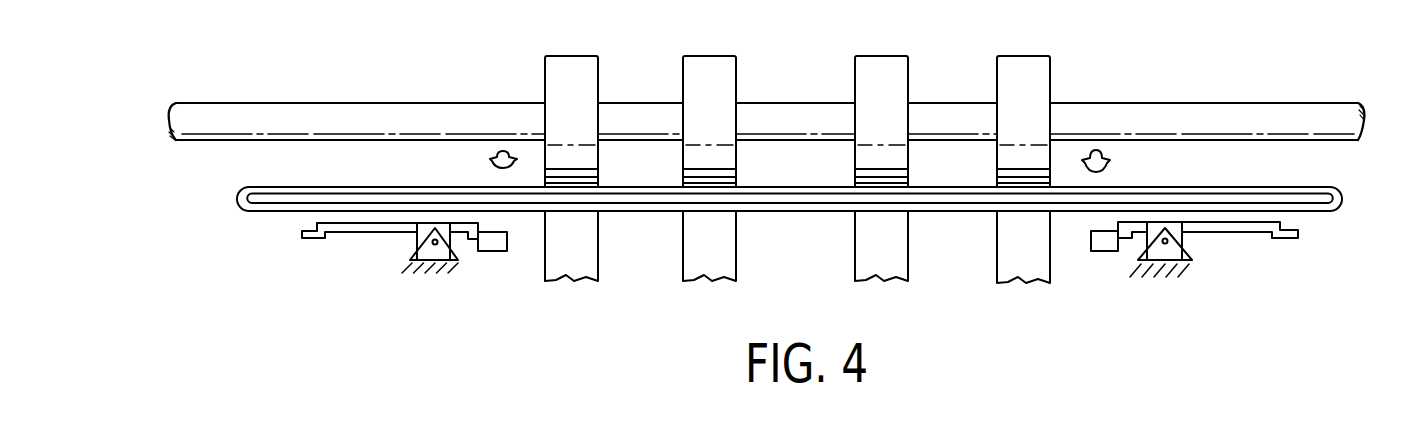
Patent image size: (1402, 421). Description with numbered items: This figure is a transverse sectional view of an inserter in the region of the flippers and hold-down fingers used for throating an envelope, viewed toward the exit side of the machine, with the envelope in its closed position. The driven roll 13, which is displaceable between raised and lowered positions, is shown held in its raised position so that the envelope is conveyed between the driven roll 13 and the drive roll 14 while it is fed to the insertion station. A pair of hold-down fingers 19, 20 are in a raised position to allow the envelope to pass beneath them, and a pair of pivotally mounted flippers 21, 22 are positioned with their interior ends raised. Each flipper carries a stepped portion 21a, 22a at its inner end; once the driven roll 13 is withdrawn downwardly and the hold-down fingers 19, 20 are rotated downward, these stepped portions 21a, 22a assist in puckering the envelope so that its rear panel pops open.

The driven roll 13 is at (865, 240).
The drive roll 14 is at (873, 78).
The hold-down finger 19 is at (490, 161).
The hold-down finger 20 is at (1110, 162).
The flipper 21 is at (348, 233).
The stepped portion 21a is at (483, 252).
The flipper 22 is at (1228, 232).
The stepped portion 22a is at (1103, 252).